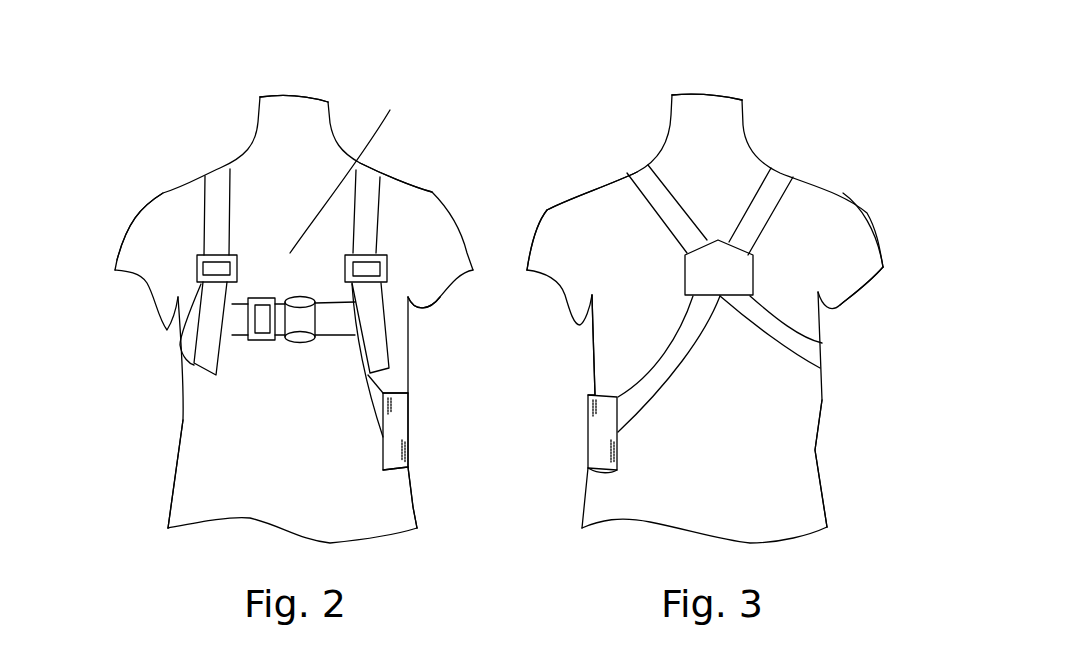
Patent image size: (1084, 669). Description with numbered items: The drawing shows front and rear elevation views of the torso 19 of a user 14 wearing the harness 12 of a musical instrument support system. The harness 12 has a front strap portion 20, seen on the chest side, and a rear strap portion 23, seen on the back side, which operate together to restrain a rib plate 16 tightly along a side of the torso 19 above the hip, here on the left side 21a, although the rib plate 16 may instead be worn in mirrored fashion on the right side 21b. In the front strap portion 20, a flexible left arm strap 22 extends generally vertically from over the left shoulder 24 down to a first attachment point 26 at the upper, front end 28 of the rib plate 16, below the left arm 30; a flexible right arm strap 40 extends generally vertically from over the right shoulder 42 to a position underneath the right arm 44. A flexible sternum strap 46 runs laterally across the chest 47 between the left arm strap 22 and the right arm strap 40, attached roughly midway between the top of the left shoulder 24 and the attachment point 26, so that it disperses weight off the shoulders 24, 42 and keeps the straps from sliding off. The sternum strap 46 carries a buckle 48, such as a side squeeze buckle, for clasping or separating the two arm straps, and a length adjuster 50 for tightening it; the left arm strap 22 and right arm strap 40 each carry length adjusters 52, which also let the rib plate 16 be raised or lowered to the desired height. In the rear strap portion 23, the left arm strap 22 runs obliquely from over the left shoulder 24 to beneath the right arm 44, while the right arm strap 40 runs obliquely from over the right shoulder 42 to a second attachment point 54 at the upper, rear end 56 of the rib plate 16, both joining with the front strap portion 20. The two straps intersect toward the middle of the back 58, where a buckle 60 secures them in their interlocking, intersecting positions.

In FIG. 2, the harness 12 is at (200, 162).
In FIG. 3, the harness 12 is at (817, 150).
In FIG. 2, the user 14 is at (340, 90).
In FIG. 3, the user 14 is at (765, 70).
In FIG. 2, the rib plate 16 is at (393, 430).
In FIG. 3, the rib plate 16 is at (603, 420).
In FIG. 2, the torso 19 is at (428, 180).
In FIG. 3, the torso 19 is at (893, 192).
In FIG. 2, the front strap portion 20 is at (83, 177).
In FIG. 2, the left side 21a is at (397, 512).
In FIG. 3, the left side 21a is at (607, 347).
In FIG. 2, the right side 21b is at (203, 497).
In FIG. 3, the right side 21b is at (800, 457).
In FIG. 2, the left arm strap 22 is at (367, 195).
In FIG. 3, the left arm strap 22 is at (640, 175).
In FIG. 3, the rear strap portion 23 is at (583, 132).
In FIG. 2, the left shoulder 24 is at (418, 208).
In FIG. 3, the left shoulder 24 is at (598, 208).
In FIG. 2, the first attachment point 26 is at (374, 407).
In FIG. 2, the upper, front end 28 is at (383, 462).
In FIG. 2, the left arm 30 is at (438, 268).
In FIG. 3, the left arm 30 is at (548, 270).
In FIG. 2, the right arm strap 40 is at (218, 198).
In FIG. 3, the right arm strap 40 is at (782, 181).
In FIG. 2, the right shoulder 42 is at (170, 200).
In FIG. 3, the right shoulder 42 is at (825, 212).
In FIG. 2, the right arm 44 is at (160, 277).
In FIG. 3, the right arm 44 is at (848, 258).
In FIG. 2, the sternum strap 46 is at (337, 323).
In FIG. 2, the chest 47 is at (348, 167).
In FIG. 2, the buckle 48 is at (298, 341).
In FIG. 2, the length adjuster 50 is at (263, 340).
In FIG. 2, the length adjusters 52 is at (197, 265).
In FIG. 3, the second attachment point 54 is at (613, 422).
In FIG. 3, the upper, rear end 56 is at (628, 463).
In FIG. 3, the back 58 is at (733, 358).
In FIG. 3, the buckle 60 is at (754, 256).